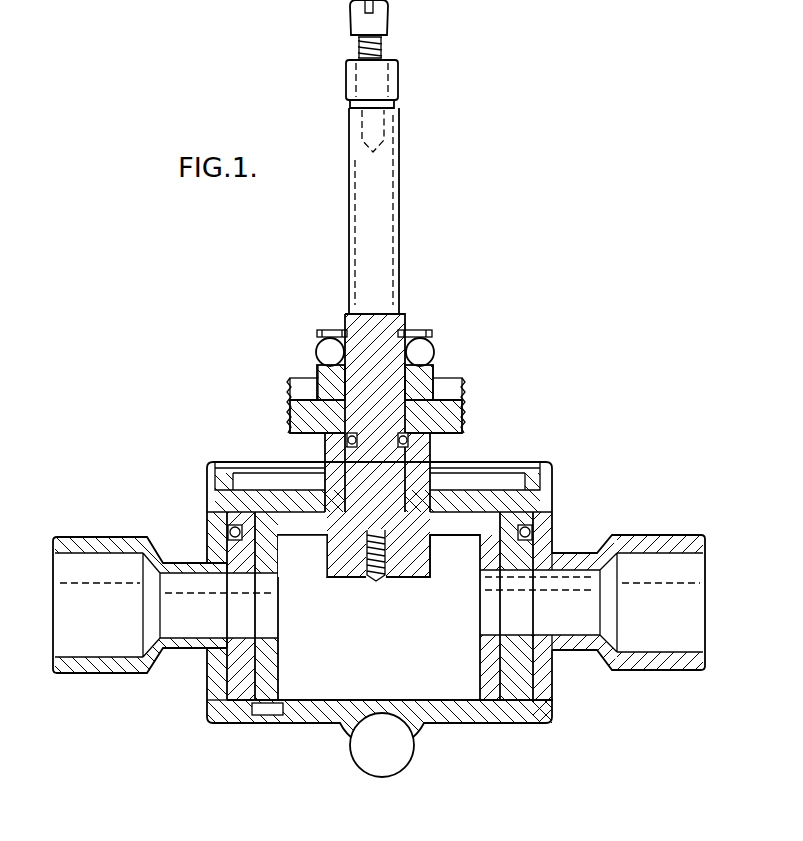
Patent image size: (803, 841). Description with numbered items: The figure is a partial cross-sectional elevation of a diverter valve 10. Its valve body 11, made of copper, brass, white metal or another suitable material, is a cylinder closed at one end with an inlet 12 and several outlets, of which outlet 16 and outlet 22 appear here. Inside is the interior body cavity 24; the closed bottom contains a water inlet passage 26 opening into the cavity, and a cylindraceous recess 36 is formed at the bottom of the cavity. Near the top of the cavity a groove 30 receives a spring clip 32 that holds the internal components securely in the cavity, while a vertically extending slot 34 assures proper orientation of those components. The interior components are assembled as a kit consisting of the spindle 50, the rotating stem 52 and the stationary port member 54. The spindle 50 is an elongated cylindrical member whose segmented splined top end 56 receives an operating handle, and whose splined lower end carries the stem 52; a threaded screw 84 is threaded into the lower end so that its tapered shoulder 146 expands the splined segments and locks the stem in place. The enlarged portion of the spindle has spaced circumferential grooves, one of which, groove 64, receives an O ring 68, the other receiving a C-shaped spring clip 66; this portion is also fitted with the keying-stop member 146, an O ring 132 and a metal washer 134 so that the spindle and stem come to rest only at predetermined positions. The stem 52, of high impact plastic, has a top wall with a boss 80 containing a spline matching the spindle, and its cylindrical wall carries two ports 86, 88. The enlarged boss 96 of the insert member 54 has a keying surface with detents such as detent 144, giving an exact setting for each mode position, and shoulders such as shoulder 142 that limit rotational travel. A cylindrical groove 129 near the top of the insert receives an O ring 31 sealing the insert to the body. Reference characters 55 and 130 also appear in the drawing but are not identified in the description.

The diverter valve 10 is at (414, 634).
The valve body 11 is at (555, 698).
The inlet 12 is at (385, 753).
The outlet 16 is at (80, 537).
The outlet 22 is at (655, 537).
The interior body cavity 24 is at (341, 677).
The water inlet passage 26 is at (360, 752).
The groove 30 is at (237, 478).
The O ring 31 is at (232, 527).
The spring clip 32 is at (245, 478).
The vertically extending slot 34 is at (207, 468).
The cylindraceous recess 36 is at (268, 725).
The spindle 50 is at (400, 232).
The rotating stem 52 is at (270, 648).
The stationary port member 54 is at (222, 700).
The pipe seat 55 is at (520, 570).
The segmented splined top end 56 is at (398, 85).
The circumferential groove 64 is at (368, 452).
The spring clip 66 is at (410, 333).
The O ring 68 is at (346, 440).
The boss 80 is at (430, 560).
The threaded screw 84 is at (376, 583).
The port 86 is at (268, 578).
The port 88 is at (482, 622).
The enlarged boss 96 is at (464, 405).
The cylindrical groove 129 is at (302, 556).
The gland ring 130 is at (440, 372).
The O ring 132 is at (436, 352).
The metal washer 134 is at (432, 343).
The shoulder 142 is at (302, 378).
The detent 144 is at (447, 388).
The keying-stop member 146 is at (397, 343).